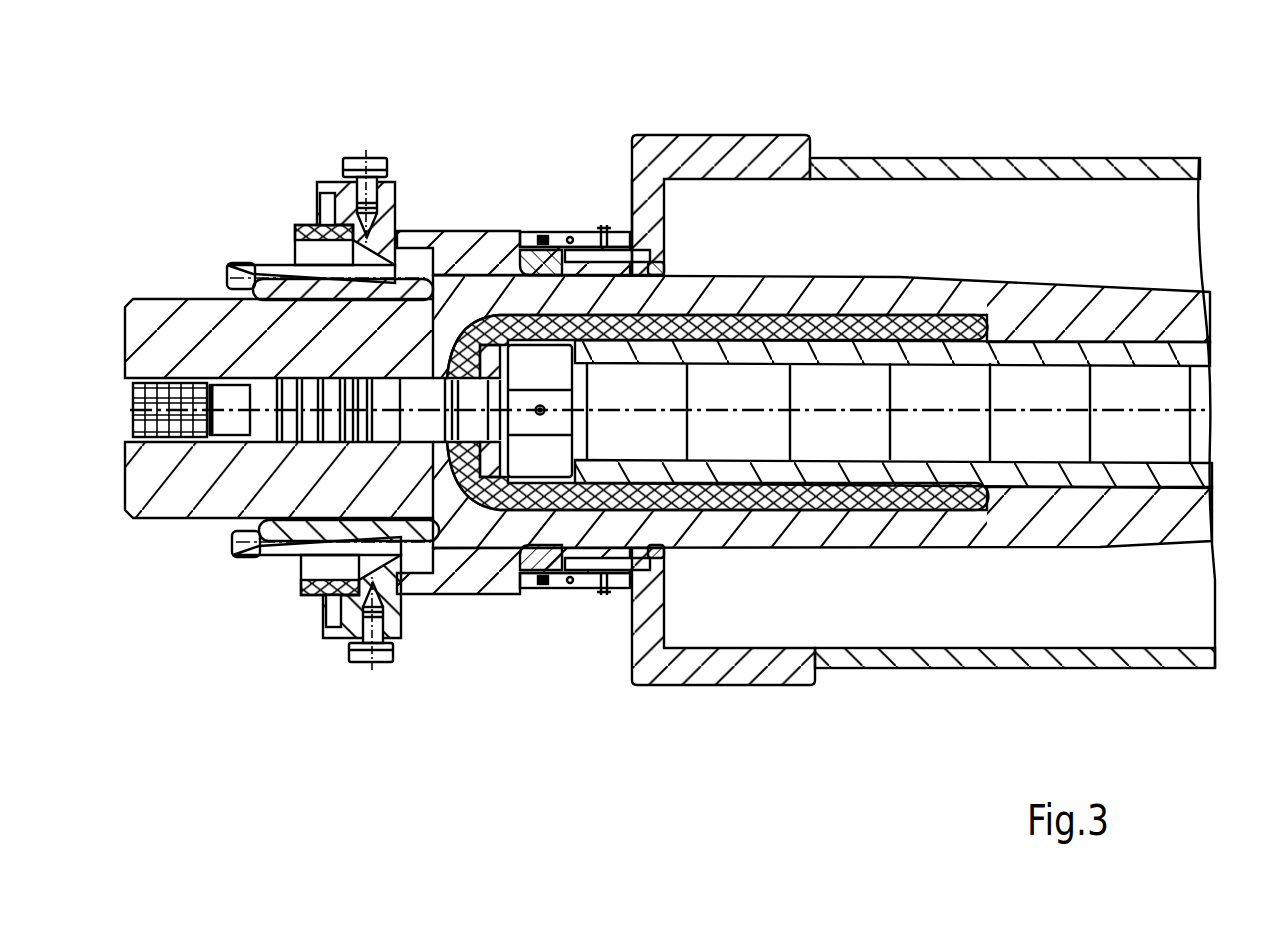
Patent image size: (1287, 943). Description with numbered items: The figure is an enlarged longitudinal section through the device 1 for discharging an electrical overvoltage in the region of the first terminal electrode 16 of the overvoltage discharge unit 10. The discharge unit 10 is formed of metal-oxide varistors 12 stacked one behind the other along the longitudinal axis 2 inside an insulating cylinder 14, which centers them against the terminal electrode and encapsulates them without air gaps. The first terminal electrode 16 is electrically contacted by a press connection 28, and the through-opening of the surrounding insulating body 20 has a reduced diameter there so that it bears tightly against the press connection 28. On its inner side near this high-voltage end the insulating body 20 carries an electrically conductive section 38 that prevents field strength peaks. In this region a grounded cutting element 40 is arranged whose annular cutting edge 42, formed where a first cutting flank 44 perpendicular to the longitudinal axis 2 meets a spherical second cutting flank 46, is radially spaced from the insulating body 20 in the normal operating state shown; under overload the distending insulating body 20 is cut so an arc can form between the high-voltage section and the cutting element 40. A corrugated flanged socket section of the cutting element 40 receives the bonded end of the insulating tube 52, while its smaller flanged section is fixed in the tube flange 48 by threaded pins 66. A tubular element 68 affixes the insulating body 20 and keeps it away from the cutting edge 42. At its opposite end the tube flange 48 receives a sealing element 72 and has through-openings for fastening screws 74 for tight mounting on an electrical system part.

The device 1 is at (682, 704).
The longitudinal axis 2 is at (1062, 412).
The overvoltage discharge unit 10 is at (1032, 452).
The varistors 12 is at (1137, 455).
The insulating cylinder 14 is at (940, 470).
The first terminal electrode 16 is at (543, 460).
The insulating body 20 is at (833, 285).
The press connection 28 is at (243, 430).
The electrically conductive section 38 is at (893, 313).
The cutting element 40 is at (681, 228).
The cutting edge 42 is at (672, 267).
The first cutting flank 44 is at (665, 262).
The second cutting flank 46 is at (631, 215).
The tube flange 48 is at (458, 230).
The insulating tube 52 is at (1003, 167).
The threaded pins 66 is at (596, 230).
The tubular element 68 is at (531, 233).
The sealing element 72 is at (307, 227).
The fastening screws 74 is at (238, 557).